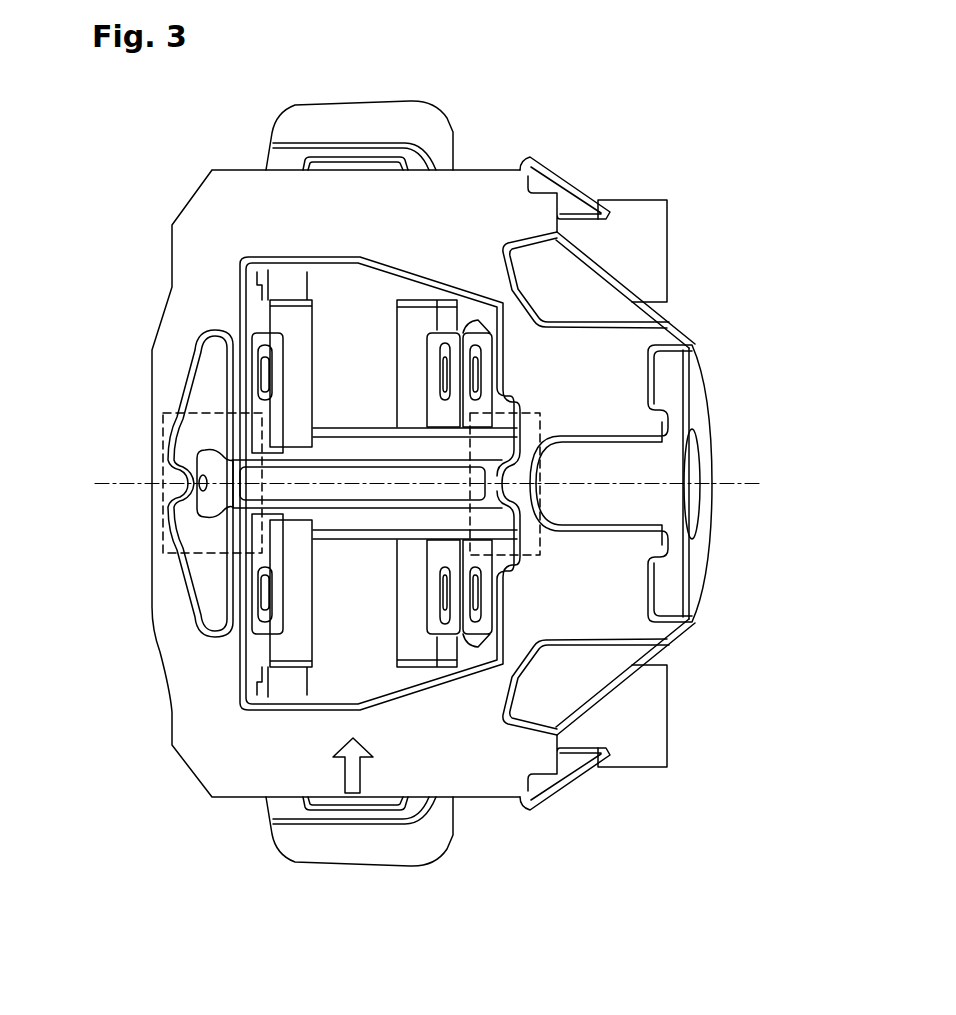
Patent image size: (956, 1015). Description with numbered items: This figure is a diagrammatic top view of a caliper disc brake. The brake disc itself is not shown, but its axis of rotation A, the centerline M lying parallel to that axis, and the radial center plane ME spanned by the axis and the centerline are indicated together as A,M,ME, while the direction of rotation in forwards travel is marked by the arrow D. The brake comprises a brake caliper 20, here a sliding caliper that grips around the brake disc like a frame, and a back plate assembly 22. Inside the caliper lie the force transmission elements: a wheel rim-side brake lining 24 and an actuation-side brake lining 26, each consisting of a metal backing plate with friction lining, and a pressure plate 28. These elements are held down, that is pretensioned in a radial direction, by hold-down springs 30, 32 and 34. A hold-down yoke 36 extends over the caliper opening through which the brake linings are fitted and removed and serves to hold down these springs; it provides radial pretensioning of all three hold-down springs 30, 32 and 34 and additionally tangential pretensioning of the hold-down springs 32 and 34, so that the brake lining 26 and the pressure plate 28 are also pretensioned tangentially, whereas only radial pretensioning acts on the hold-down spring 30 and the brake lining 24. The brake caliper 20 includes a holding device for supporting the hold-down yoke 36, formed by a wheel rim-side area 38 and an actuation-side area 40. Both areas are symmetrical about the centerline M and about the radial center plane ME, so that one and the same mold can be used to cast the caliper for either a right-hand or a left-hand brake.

The brake caliper 20 is at (205, 213).
The back plate assembly 22 is at (455, 127).
The wheel rim-side brake lining 24 is at (262, 316).
The actuation-side brake lining 26 is at (417, 327).
The pressure plate 28 is at (457, 637).
The hold-down spring 30 is at (440, 548).
The hold-down spring 32 is at (375, 697).
The hold-down spring 34 is at (478, 568).
The hold-down yoke 36 is at (345, 513).
The wheel rim-side area 38 is at (190, 398).
The actuation-side area 40 is at (523, 410).
The axis of rotation, centerline and radial center plane A,M,ME is at (763, 483).
The direction of rotation arrow D is at (353, 770).